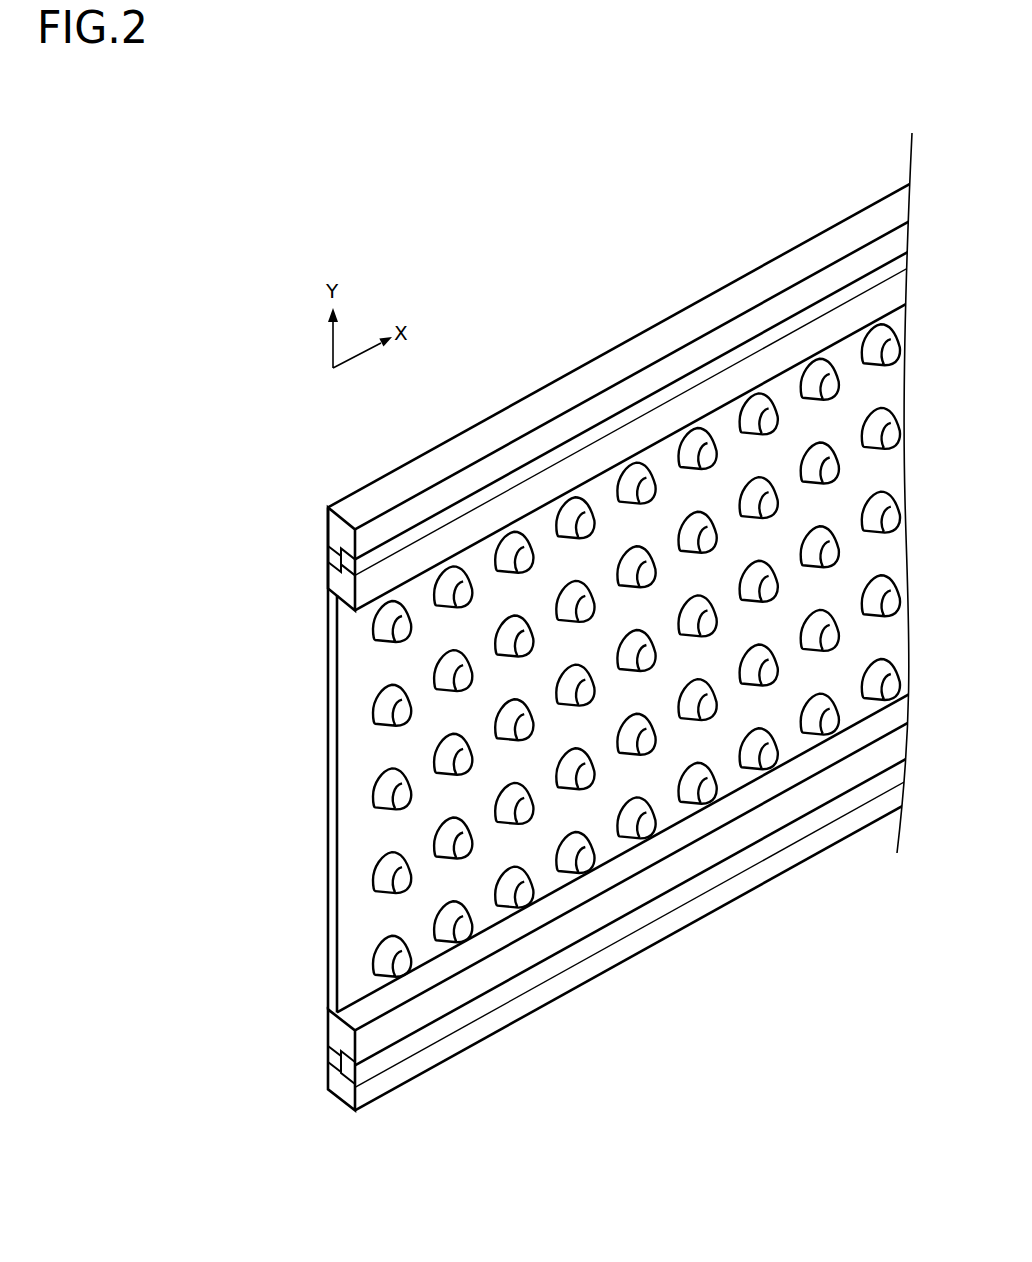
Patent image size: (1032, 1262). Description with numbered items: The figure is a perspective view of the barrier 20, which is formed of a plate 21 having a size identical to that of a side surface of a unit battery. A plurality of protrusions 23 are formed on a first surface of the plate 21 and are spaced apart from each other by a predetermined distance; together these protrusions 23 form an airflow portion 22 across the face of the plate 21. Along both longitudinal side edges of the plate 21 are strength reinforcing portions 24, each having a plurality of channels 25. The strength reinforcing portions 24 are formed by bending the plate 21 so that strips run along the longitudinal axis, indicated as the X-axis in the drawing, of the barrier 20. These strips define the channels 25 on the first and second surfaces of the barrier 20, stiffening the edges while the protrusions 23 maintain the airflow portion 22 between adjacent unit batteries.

The barrier 20 is at (200, 560).
The plate 21 is at (338, 775).
The airflow portion 22 is at (355, 835).
The protrusions 23 is at (373, 960).
The strength reinforcing portions 24 is at (426, 446).
The channels 25 is at (337, 572).